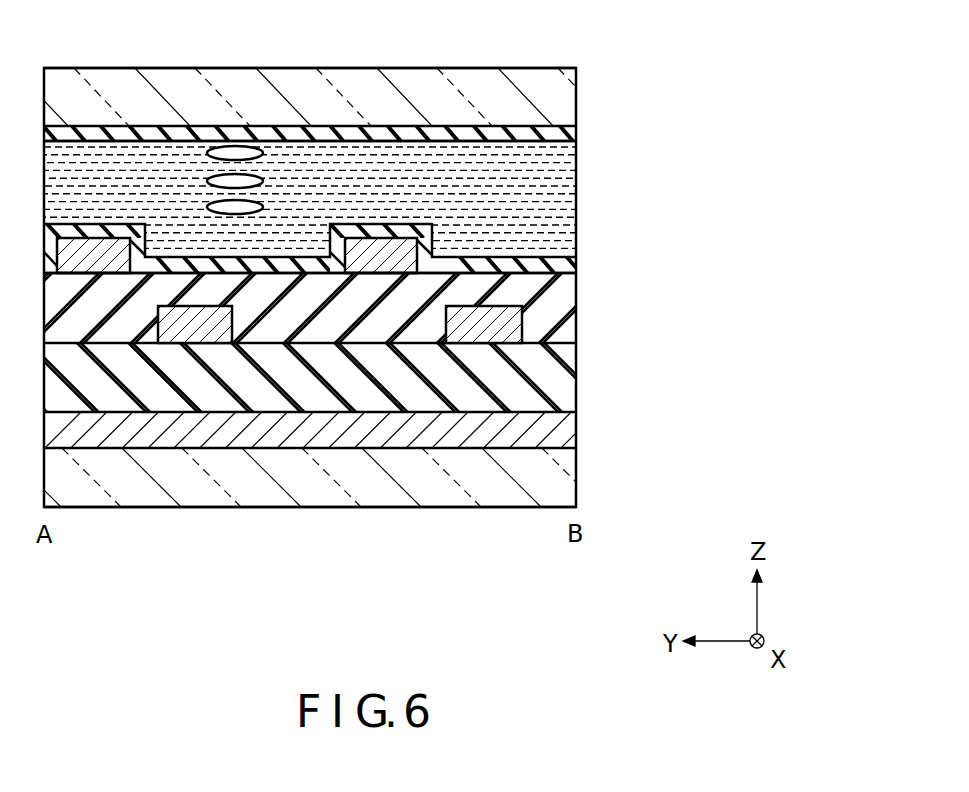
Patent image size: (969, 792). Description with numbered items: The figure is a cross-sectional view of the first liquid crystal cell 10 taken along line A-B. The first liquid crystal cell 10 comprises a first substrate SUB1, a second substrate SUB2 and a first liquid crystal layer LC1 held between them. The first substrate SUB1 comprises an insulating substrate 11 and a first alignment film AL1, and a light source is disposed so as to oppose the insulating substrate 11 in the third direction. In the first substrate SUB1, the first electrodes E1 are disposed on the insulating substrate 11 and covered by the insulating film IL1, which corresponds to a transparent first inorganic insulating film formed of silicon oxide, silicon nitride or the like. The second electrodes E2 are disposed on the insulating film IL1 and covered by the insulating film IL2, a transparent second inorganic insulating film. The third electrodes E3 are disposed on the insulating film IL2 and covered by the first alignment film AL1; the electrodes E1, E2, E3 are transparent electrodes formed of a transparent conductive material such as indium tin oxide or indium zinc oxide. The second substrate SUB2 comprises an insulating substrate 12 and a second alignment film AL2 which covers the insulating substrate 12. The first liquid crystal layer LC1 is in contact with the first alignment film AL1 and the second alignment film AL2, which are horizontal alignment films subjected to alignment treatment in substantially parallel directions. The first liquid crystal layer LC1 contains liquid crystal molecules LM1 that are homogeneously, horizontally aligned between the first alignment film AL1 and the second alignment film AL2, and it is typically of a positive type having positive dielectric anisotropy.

The first liquid crystal cell 10 is at (300, 531).
The insulating substrate 11 is at (562, 470).
The insulating substrate 12 is at (576, 88).
The first substrate SUB1 is at (586, 514).
The second substrate SUB2 is at (581, 65).
The first electrode E1 is at (562, 432).
The second electrode E2 is at (482, 326).
The third electrode E3 is at (383, 256).
The insulating film IL1 is at (562, 378).
The insulating film IL2 is at (562, 312).
The first alignment film AL1 is at (576, 264).
The second alignment film AL2 is at (576, 135).
The first liquid crystal layer LC1 is at (576, 187).
The liquid crystal molecules LM1 is at (257, 146).